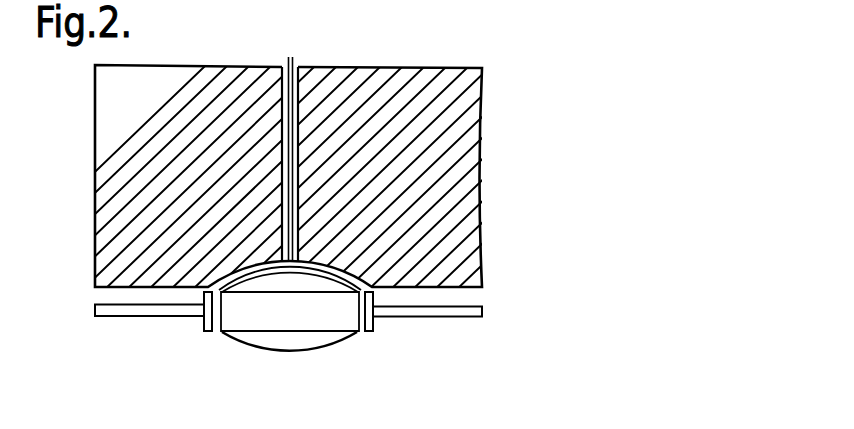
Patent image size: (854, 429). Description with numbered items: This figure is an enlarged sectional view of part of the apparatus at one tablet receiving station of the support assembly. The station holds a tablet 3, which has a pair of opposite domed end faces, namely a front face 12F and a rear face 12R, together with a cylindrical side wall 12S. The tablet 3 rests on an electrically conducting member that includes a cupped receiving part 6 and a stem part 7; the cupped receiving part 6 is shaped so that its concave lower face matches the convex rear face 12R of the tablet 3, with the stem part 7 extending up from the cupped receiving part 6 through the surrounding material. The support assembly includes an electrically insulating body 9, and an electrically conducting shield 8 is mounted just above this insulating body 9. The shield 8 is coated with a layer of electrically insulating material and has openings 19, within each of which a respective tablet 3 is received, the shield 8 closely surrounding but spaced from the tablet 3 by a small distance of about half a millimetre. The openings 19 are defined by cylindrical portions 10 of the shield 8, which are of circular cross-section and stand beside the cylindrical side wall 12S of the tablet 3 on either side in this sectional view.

The electrically insulating body 9 is at (467, 120).
The stem part 7 is at (291, 58).
The rear face 12R is at (350, 270).
The cupped receiving part 6 is at (222, 277).
The cylindrical side wall 12S is at (312, 326).
The front face 12F is at (288, 345).
The opening 19 is at (221, 331).
The cylindrical portion 10 is at (204, 321).
The tablet 3 is at (359, 333).
The electrically conducting shield 8 is at (458, 318).